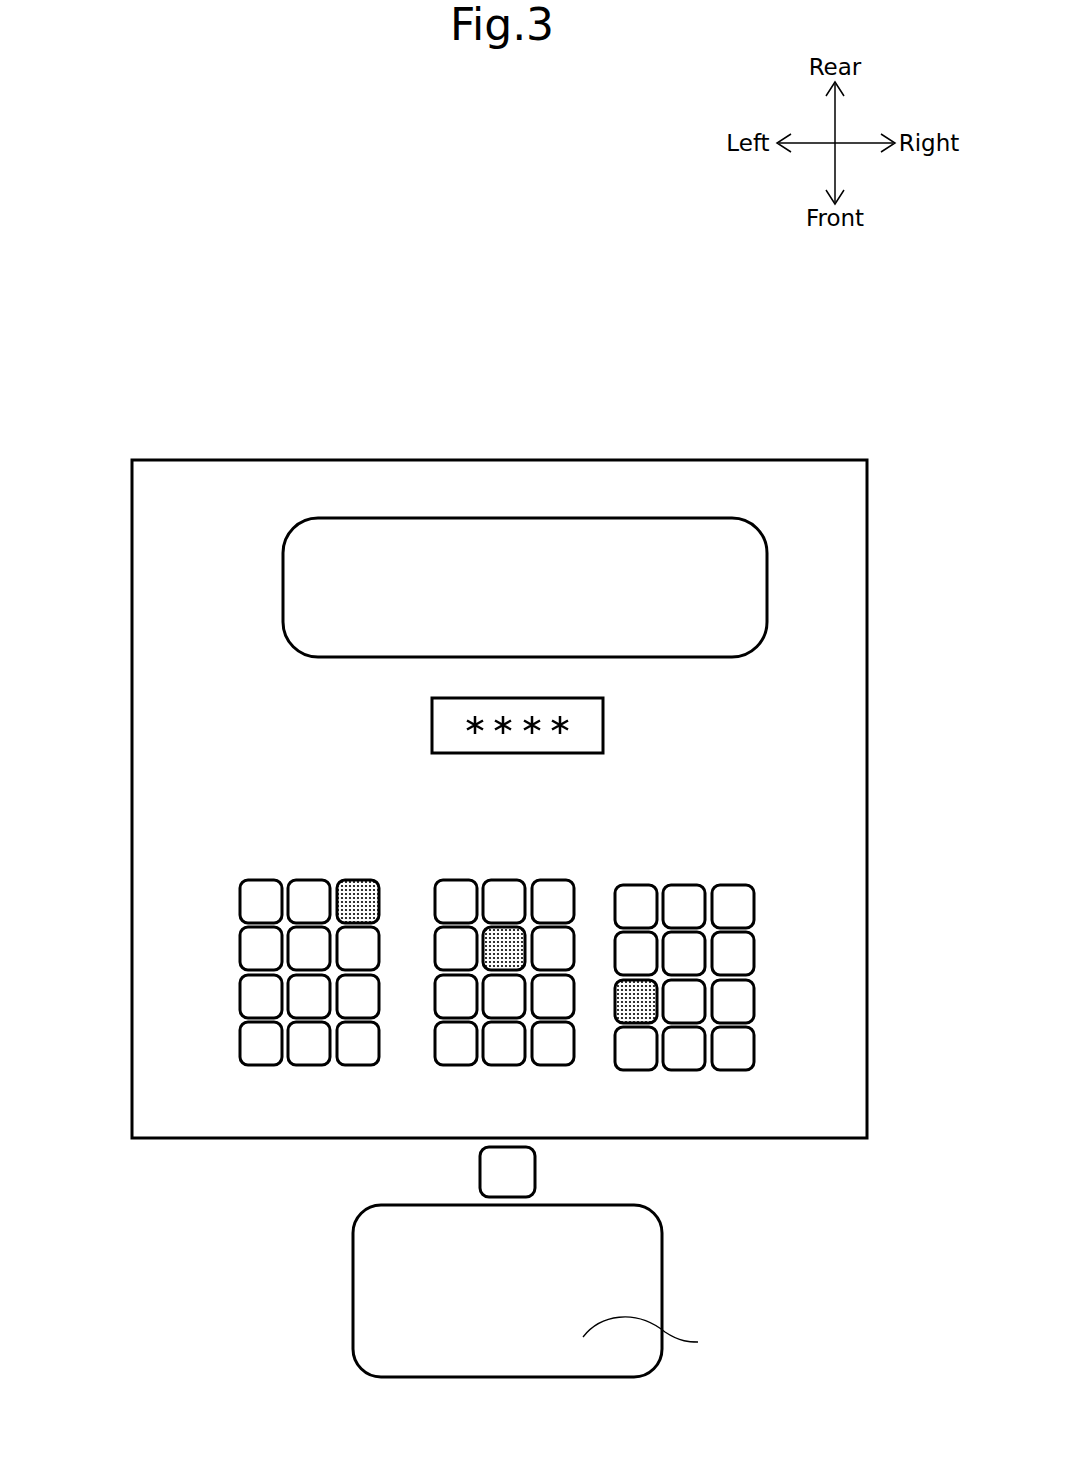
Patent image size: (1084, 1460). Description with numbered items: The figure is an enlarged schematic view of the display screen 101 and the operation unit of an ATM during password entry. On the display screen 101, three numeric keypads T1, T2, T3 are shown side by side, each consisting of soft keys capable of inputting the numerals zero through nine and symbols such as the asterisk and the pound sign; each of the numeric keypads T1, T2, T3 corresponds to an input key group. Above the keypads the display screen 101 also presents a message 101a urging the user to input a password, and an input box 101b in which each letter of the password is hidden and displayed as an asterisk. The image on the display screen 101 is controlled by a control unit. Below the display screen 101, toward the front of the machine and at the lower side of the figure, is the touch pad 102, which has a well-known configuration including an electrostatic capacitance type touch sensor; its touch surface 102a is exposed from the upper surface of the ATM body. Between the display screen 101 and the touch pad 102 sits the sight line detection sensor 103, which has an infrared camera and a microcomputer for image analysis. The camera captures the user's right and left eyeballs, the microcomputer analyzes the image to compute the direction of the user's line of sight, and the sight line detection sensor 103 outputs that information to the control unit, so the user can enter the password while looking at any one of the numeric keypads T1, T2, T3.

The display screen 101 is at (696, 497).
The message 101a is at (378, 518).
The input box 101b is at (432, 727).
The numeric keypad T1 is at (260, 862).
The numeric keypad T2 is at (457, 875).
The numeric keypad T3 is at (635, 877).
The sight line detection sensor 103 is at (517, 1173).
The touch pad 102 is at (662, 1290).
The touch surface 102a is at (676, 1338).